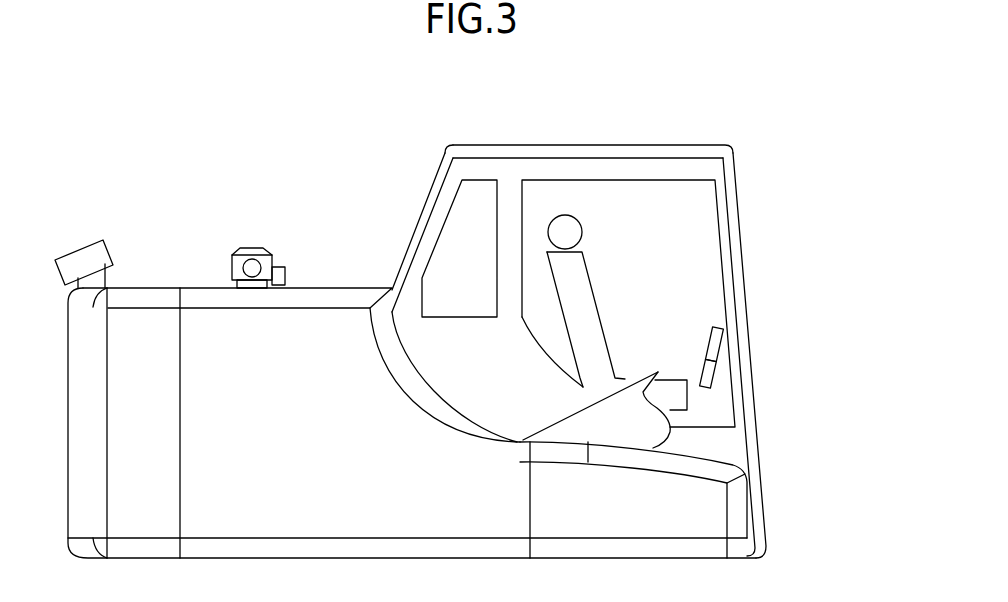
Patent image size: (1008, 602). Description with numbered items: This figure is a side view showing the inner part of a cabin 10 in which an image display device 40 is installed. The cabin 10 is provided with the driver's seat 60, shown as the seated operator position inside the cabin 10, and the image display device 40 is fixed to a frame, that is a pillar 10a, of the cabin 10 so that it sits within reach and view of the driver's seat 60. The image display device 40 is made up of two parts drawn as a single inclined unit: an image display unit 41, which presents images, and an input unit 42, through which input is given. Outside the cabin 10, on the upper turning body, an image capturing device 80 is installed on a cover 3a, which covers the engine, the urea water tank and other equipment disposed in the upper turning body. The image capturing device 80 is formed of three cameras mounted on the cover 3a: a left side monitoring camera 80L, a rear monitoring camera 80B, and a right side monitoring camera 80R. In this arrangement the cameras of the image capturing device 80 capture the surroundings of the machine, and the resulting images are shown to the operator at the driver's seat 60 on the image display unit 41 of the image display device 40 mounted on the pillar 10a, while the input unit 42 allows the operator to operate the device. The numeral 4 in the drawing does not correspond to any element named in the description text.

The cover 3a is at (337, 323).
The cabin 10 is at (570, 145).
The frame (pillar) 10a is at (745, 270).
The driver's seat 60 is at (577, 275).
The operator seat 4 is at (658, 438).
The image display device 40 is at (790, 362).
The image display unit 41 is at (722, 350).
The input unit 42 is at (717, 374).
The image capturing device 80 is at (170, 216).
The rear monitoring camera 80B is at (80, 247).
The right side monitoring camera 80R is at (250, 248).
The left side monitoring camera 80L is at (250, 235).